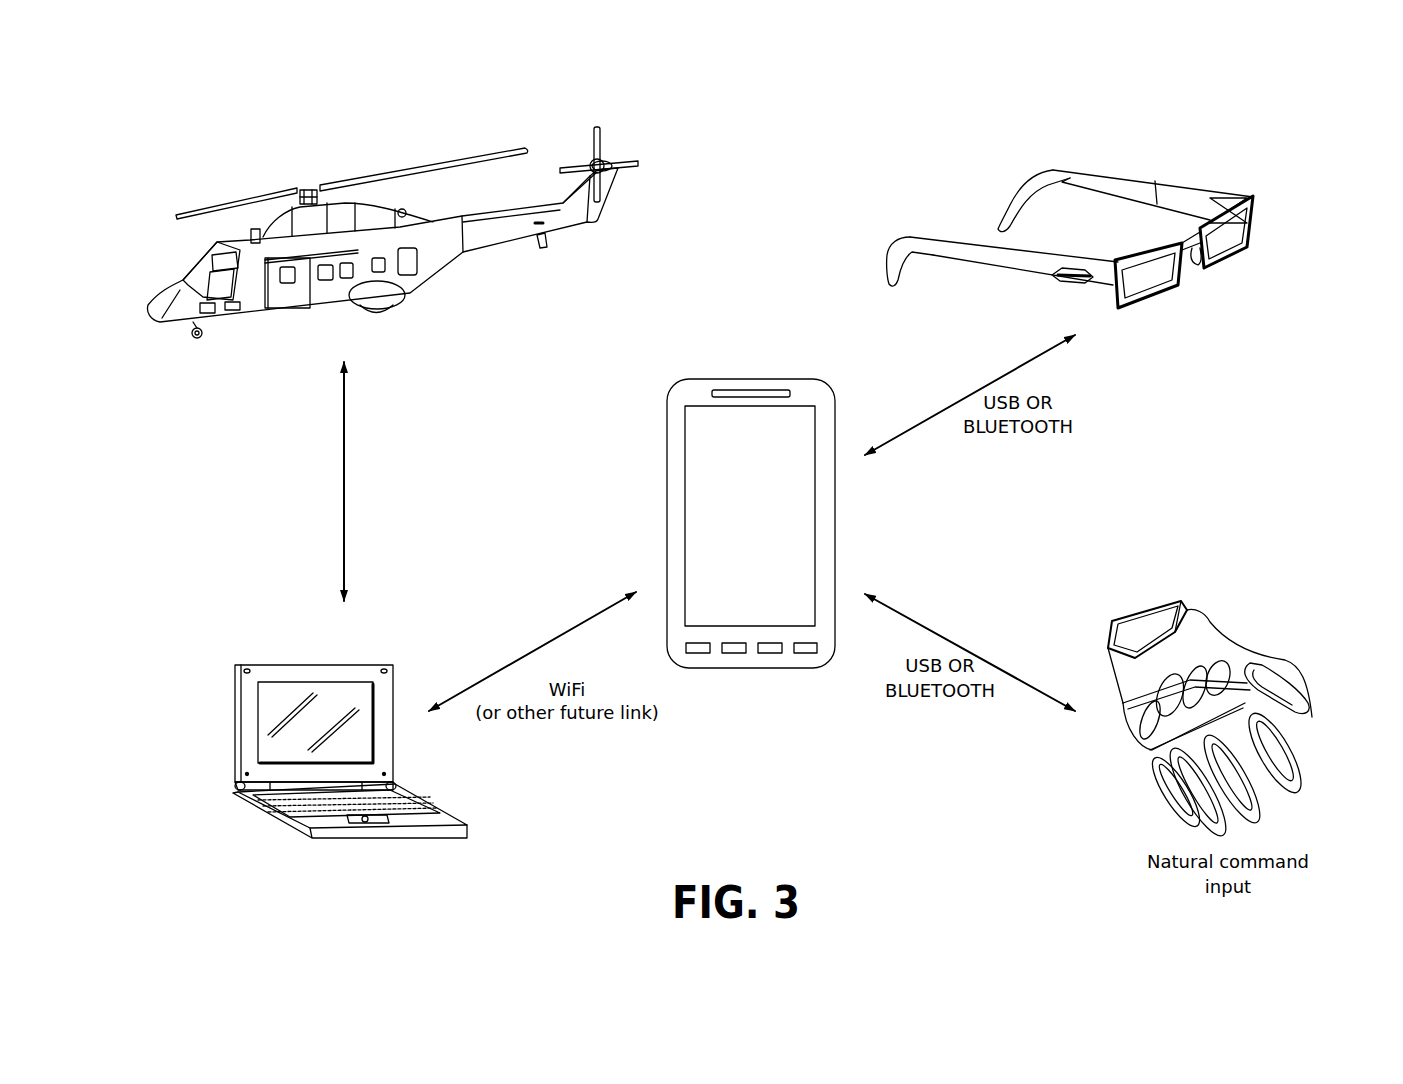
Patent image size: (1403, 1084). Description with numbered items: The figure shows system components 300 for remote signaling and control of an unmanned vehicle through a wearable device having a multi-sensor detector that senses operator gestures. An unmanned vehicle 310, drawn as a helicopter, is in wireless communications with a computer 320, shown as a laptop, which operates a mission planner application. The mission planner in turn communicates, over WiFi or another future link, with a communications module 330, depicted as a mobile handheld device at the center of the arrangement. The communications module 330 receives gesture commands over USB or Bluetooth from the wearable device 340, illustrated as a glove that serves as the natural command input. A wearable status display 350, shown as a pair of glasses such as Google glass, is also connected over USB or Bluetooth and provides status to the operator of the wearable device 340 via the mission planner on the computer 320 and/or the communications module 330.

The system components 300 is at (1288, 131).
The unmanned vehicle 310 is at (428, 278).
The computer 320 is at (270, 665).
The communications module 330 is at (748, 379).
The wearable device 340 is at (1168, 600).
The wearable status display 350 is at (1150, 180).